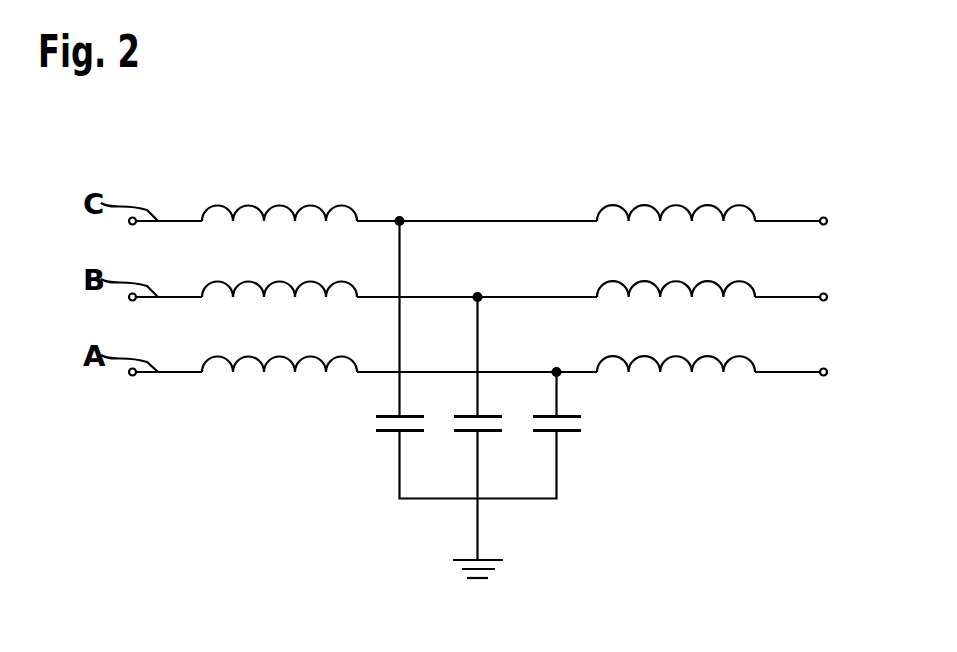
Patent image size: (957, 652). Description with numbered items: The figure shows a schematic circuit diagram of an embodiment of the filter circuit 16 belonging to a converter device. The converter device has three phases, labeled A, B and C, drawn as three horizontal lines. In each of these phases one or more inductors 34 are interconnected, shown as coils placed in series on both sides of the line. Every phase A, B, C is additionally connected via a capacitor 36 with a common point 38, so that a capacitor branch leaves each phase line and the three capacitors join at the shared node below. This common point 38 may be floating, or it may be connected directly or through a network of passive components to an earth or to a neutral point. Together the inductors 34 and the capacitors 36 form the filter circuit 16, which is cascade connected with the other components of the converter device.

The inductors 34 is at (283, 181).
The filter circuit 16 is at (487, 181).
The capacitor 36 is at (613, 403).
The common point 38 is at (514, 572).